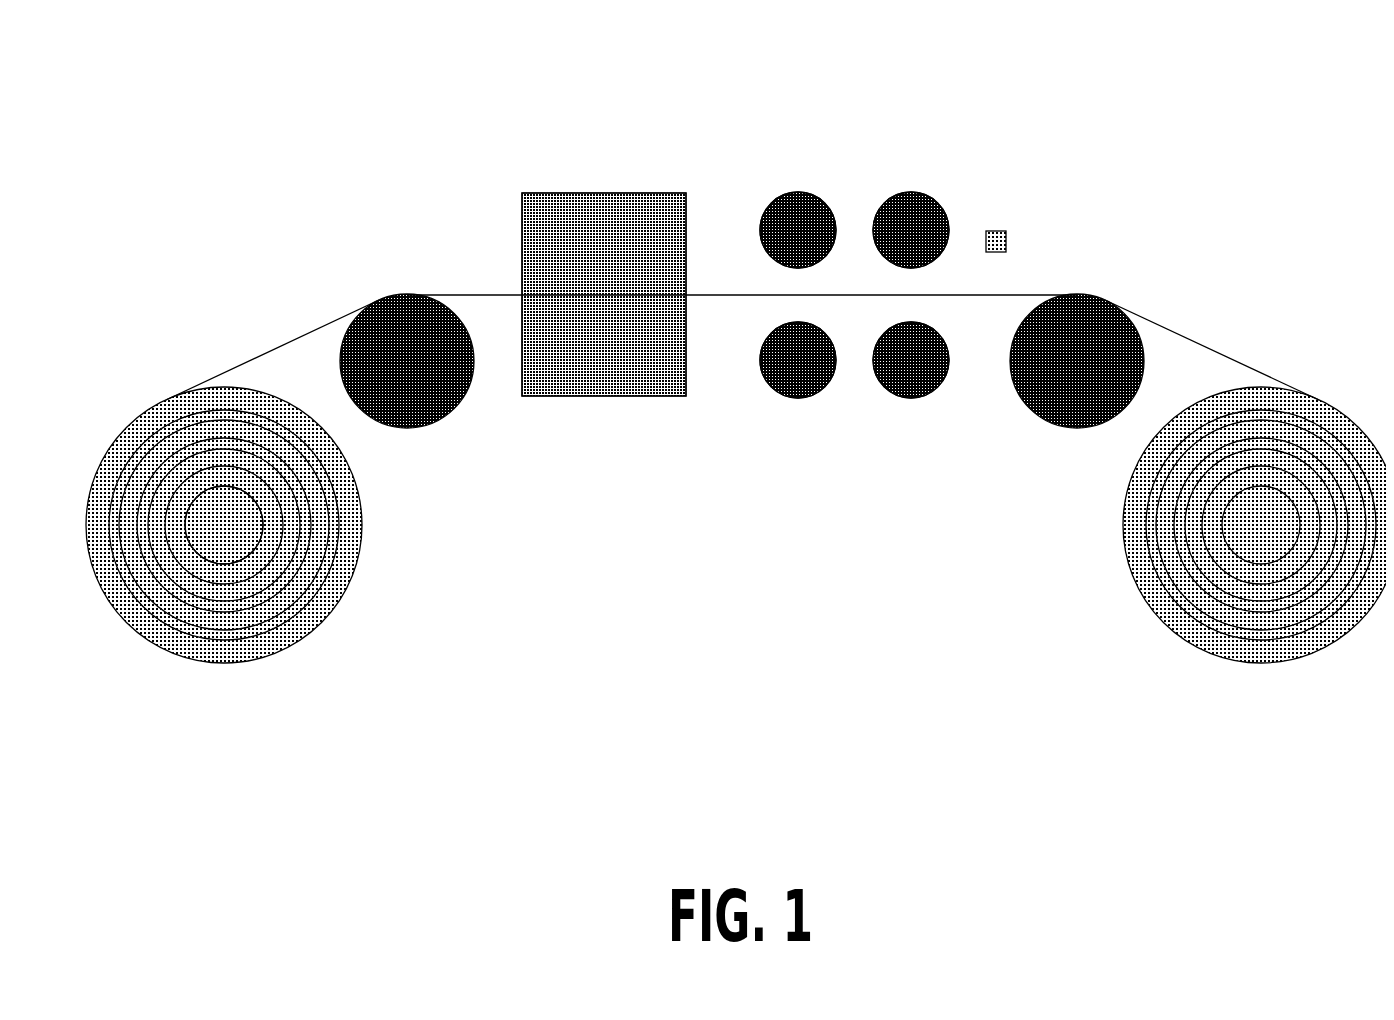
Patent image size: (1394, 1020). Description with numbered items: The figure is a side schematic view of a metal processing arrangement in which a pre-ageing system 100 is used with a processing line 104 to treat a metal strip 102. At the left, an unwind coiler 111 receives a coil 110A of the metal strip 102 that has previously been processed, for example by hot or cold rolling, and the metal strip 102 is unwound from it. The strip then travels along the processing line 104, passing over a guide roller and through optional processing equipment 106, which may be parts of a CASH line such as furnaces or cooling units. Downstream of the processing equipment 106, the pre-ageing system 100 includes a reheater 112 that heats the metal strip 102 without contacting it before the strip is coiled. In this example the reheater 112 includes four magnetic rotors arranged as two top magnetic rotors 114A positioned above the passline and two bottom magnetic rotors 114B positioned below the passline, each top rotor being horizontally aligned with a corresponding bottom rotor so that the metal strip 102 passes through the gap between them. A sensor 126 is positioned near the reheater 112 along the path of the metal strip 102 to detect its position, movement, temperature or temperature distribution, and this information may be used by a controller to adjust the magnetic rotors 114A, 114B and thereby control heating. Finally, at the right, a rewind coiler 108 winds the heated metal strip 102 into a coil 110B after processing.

The pre-ageing system 100 is at (818, 88).
The metal strip 102 is at (470, 287).
The processing line 104 is at (552, 90).
The processing equipment 106 is at (597, 389).
The rewind coiler 108 is at (1280, 517).
The coil 110A is at (178, 400).
The coil 110B is at (1127, 563).
The unwind coiler 111 is at (198, 515).
The reheater 112 is at (743, 107).
The top magnetic rotor 114A is at (770, 218).
The bottom magnetic rotor 114B is at (780, 379).
The sensor 126 is at (990, 222).